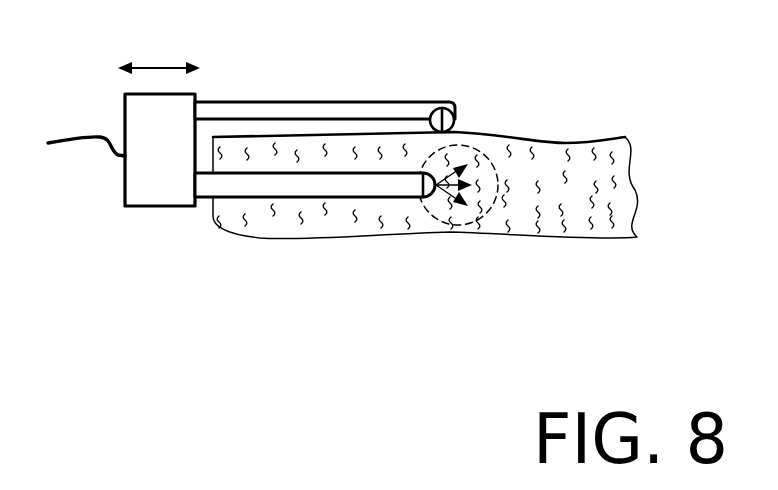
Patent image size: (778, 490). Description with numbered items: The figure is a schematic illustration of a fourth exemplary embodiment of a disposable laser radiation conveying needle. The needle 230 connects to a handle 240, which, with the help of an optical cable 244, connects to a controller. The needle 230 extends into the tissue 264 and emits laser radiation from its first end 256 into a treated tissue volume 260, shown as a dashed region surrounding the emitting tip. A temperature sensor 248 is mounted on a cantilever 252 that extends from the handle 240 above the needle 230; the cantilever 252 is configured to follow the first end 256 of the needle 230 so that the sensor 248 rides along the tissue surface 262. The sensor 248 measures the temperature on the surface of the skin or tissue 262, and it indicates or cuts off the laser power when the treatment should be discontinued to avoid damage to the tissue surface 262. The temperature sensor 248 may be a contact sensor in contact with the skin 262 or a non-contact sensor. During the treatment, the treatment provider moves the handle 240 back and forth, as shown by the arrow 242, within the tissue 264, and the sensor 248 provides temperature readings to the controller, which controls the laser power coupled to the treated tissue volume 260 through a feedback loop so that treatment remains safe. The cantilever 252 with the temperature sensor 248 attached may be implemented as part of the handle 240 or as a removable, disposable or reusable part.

The needle 230 is at (350, 185).
The handle 240 is at (152, 180).
The arrow 242 is at (152, 66).
The optical cable 244 is at (92, 137).
The temperature sensor 248 is at (458, 108).
The cantilever 252 is at (385, 112).
The first end of needle 256 is at (434, 194).
The treated tissue volume 260 is at (490, 203).
The tissue surface 262 is at (555, 142).
The tissue 264 is at (654, 182).